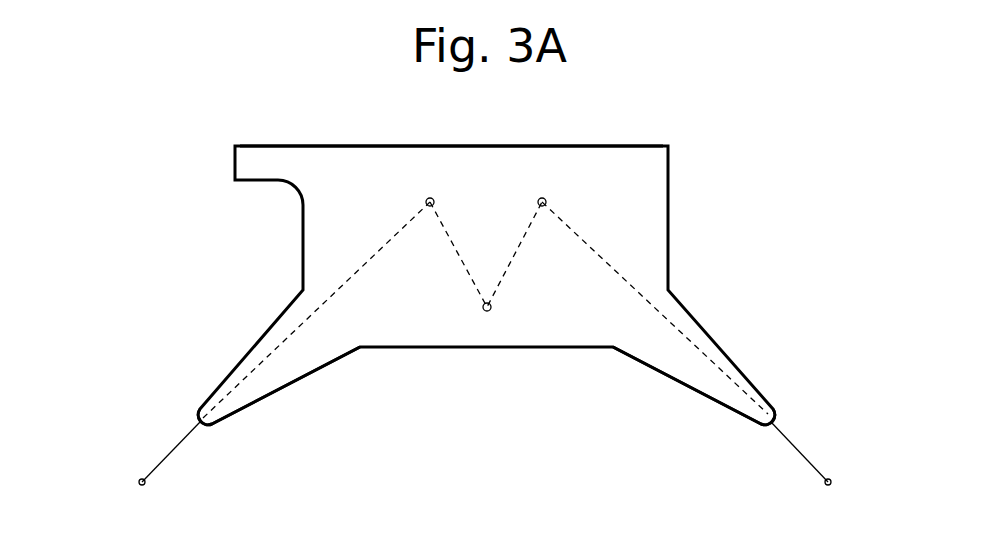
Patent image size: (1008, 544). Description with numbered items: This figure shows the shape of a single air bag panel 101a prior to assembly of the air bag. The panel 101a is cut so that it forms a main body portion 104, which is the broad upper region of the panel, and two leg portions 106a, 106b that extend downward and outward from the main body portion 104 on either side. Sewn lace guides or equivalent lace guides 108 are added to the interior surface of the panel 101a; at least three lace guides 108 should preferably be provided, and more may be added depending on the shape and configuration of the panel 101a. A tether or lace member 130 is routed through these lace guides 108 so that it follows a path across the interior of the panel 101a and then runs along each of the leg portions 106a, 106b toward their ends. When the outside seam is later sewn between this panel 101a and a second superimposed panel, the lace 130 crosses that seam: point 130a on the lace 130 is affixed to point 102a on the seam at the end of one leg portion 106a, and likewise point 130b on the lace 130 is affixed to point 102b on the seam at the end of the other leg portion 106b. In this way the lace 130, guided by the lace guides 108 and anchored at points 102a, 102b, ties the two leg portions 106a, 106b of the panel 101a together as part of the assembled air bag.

The air bag panel 101a is at (682, 139).
The main body portion 104 is at (490, 168).
The leg portion 106a is at (278, 377).
The leg portion 106b is at (697, 377).
The point on the seam 102a is at (200, 421).
The point on the seam 102b is at (772, 422).
The lace guides 108 is at (430, 202).
The tether or lace member 130 is at (660, 316).
The point on the lace 130a is at (351, 274).
The point on the lace 130b is at (620, 276).